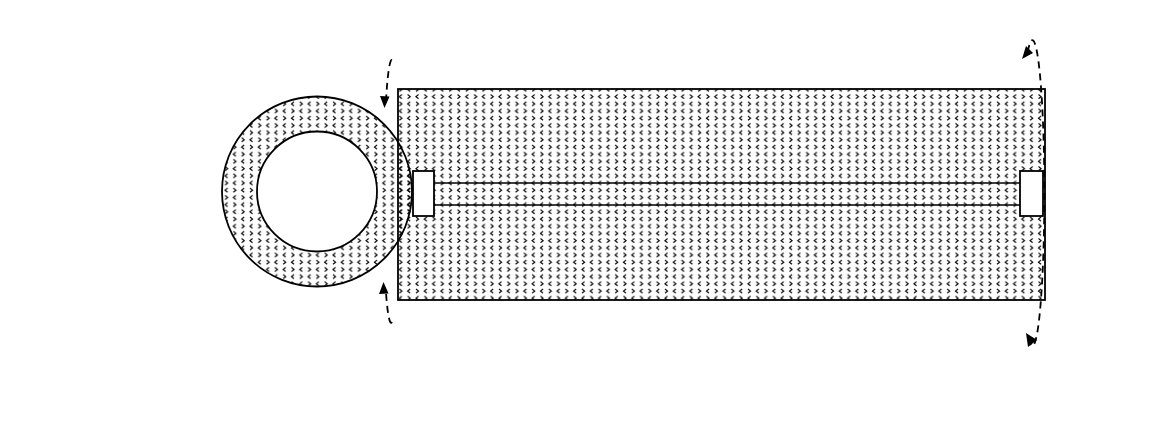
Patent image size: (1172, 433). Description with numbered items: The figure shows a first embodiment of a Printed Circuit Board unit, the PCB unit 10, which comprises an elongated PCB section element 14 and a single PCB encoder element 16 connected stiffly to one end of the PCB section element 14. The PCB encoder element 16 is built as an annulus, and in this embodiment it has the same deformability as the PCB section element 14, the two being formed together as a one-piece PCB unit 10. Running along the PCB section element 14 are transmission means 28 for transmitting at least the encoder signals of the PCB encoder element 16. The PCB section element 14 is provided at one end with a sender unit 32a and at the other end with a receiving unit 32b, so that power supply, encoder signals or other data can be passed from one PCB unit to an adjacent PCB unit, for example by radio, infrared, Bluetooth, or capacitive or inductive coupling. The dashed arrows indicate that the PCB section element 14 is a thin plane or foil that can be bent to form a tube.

The PCB unit 10 is at (698, 68).
The PCB section element 14 is at (920, 115).
The PCB encoder element 16 is at (260, 240).
The transmission means 28 is at (709, 183).
The sender unit 32a is at (1032, 200).
The receiving unit 32b is at (423, 182).